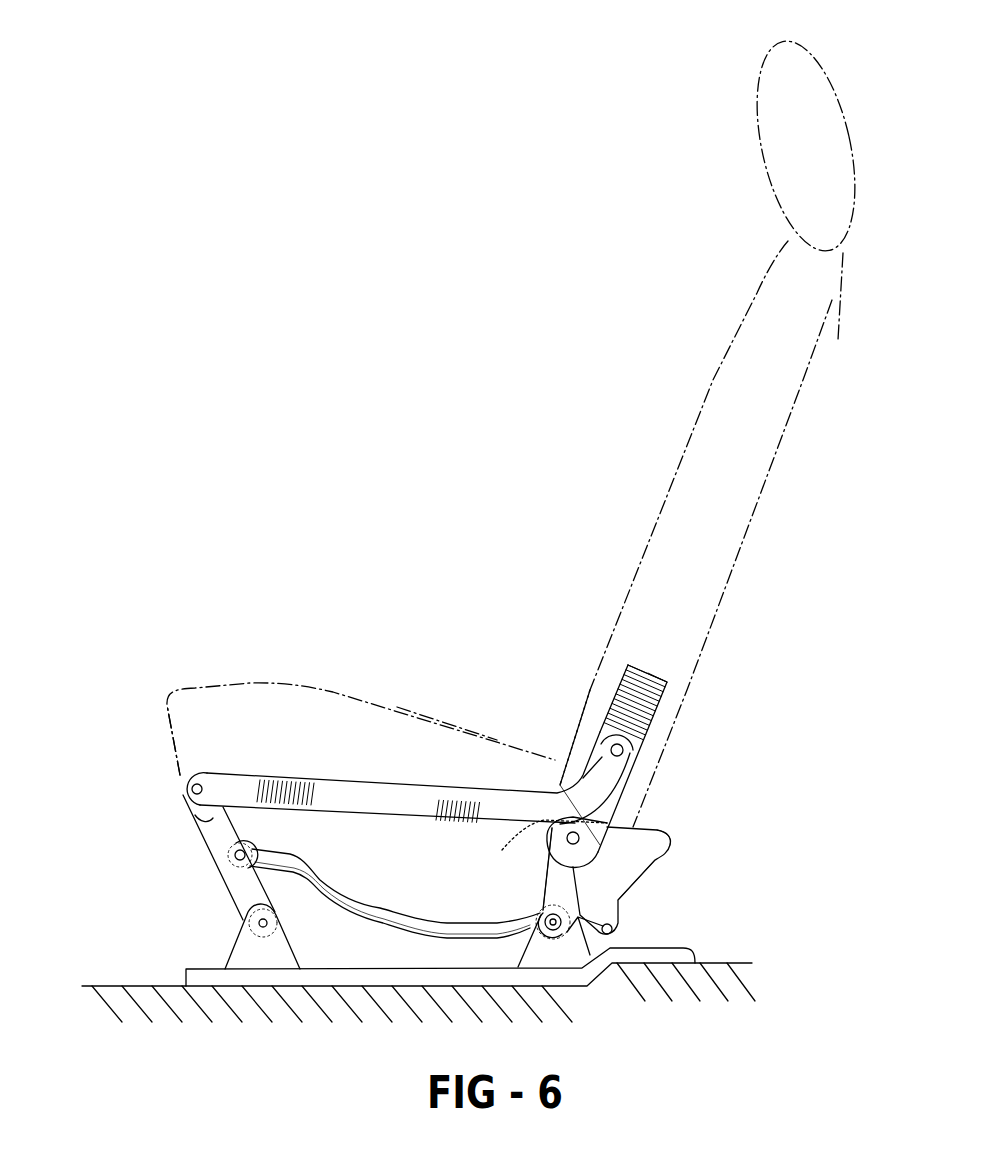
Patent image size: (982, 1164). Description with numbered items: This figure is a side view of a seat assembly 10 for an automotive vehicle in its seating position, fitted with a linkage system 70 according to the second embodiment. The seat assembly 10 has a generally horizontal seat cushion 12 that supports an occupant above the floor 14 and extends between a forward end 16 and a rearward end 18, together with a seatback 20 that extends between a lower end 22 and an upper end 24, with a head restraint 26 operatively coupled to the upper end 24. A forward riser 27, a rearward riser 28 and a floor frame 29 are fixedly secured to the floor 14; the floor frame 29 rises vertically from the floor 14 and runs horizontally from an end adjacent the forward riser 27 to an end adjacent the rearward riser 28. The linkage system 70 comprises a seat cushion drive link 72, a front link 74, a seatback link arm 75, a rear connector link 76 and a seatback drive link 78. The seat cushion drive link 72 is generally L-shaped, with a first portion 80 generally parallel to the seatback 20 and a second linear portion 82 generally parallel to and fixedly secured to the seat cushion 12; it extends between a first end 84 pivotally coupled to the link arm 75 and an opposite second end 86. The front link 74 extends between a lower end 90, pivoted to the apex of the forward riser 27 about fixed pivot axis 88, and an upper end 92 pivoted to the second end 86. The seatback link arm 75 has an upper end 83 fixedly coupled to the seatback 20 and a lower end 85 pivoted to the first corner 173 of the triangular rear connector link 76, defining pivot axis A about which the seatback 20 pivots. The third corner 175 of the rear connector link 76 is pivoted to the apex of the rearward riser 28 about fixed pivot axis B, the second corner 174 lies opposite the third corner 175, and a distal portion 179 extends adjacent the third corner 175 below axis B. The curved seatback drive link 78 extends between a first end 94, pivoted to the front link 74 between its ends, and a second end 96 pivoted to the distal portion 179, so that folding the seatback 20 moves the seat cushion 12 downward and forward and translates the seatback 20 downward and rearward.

The seat assembly 10 is at (447, 530).
The seat cushion 12 is at (338, 690).
The floor 14 is at (90, 986).
The forward end 16 is at (178, 697).
The rearward end 18 is at (468, 740).
The seatback 20 is at (658, 493).
The lower end 22 is at (587, 700).
The upper end 24 is at (820, 293).
The head restraint 26 is at (770, 200).
The forward riser 27 is at (282, 952).
The rearward riser 28 is at (540, 952).
The floor frame 29 is at (417, 968).
The linkage system 70 is at (95, 852).
The seat cushion drive link 72 is at (403, 787).
The front link 74 is at (228, 854).
The seatback link arm 75 is at (690, 690).
The rear connector link 76 is at (660, 830).
The seatback drive link 78 is at (373, 912).
The first portion 80 is at (603, 770).
The second linear portion 82 is at (358, 822).
The upper end 83 is at (650, 667).
The first end 84 is at (633, 750).
The lower end 85 is at (622, 826).
The second end 86 is at (192, 787).
The fixed pivot axis 88 is at (262, 923).
The lower end 90 is at (238, 878).
The upper end 92 is at (197, 820).
The first end 94 is at (233, 854).
The second end 96 is at (613, 929).
The first corner 173 is at (535, 840).
The second corner 174 is at (672, 848).
The third corner 175 is at (543, 890).
The distal portion 179 is at (640, 907).
The pivot axis A is at (566, 841).
The fixed pivot axis B is at (530, 910).